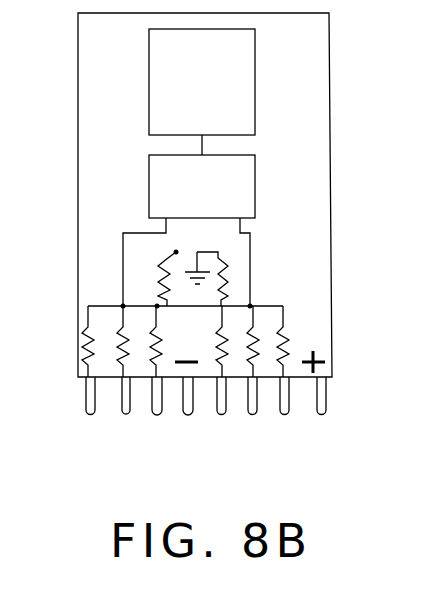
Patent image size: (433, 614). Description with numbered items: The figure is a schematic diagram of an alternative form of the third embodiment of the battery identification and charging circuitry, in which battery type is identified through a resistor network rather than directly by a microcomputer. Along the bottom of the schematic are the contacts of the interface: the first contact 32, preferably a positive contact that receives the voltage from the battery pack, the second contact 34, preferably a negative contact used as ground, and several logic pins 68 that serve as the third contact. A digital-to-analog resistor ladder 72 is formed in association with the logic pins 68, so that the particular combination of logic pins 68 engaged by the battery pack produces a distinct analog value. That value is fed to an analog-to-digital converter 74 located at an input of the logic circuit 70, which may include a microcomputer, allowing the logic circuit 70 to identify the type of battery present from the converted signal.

The logic circuit 70 is at (218, 89).
The analog-to-digital converter 74 is at (220, 197).
The digital-to-analog resistor ladder 72 is at (100, 282).
The logic pins 68 is at (157, 415).
The second contact 34 is at (188, 415).
The first contact 32 is at (321, 415).